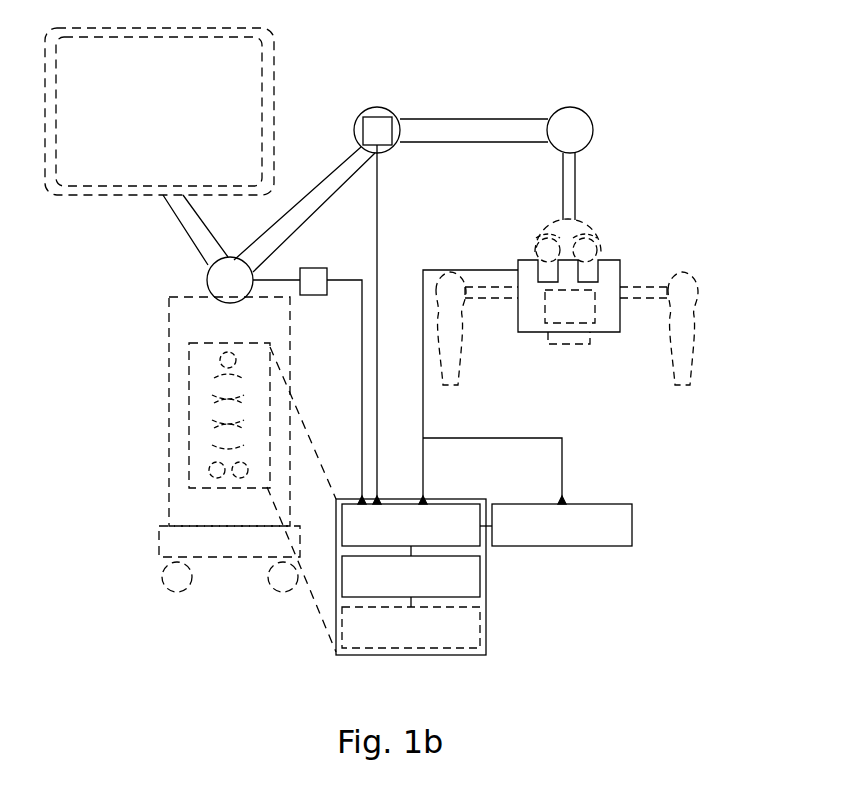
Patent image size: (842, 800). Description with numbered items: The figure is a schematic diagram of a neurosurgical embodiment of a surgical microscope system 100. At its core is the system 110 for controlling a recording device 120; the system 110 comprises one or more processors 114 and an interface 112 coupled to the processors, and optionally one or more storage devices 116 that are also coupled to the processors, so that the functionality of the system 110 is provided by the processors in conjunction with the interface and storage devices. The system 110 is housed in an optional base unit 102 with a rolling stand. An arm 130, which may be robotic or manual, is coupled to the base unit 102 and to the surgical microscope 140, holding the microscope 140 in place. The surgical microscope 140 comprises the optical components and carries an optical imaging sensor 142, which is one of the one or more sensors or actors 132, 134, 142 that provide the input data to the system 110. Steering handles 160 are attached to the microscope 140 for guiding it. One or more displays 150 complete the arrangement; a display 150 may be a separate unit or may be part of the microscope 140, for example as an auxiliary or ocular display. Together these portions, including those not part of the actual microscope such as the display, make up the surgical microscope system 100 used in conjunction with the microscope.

The surgical microscope system 100 is at (712, 648).
The base unit 102 is at (158, 538).
The system 110 is at (416, 655).
The interface 112 is at (483, 546).
The processor 114 is at (483, 588).
The storage device 116 is at (483, 629).
The recording device 120 is at (574, 539).
The arm 130 is at (510, 118).
The sensor or actor 132 is at (394, 146).
The sensor or actor 134 is at (310, 296).
The surgical microscope 140 is at (608, 333).
The optical imaging sensor 142 is at (540, 268).
The display 150 is at (276, 80).
The steering handles 160 is at (695, 386).